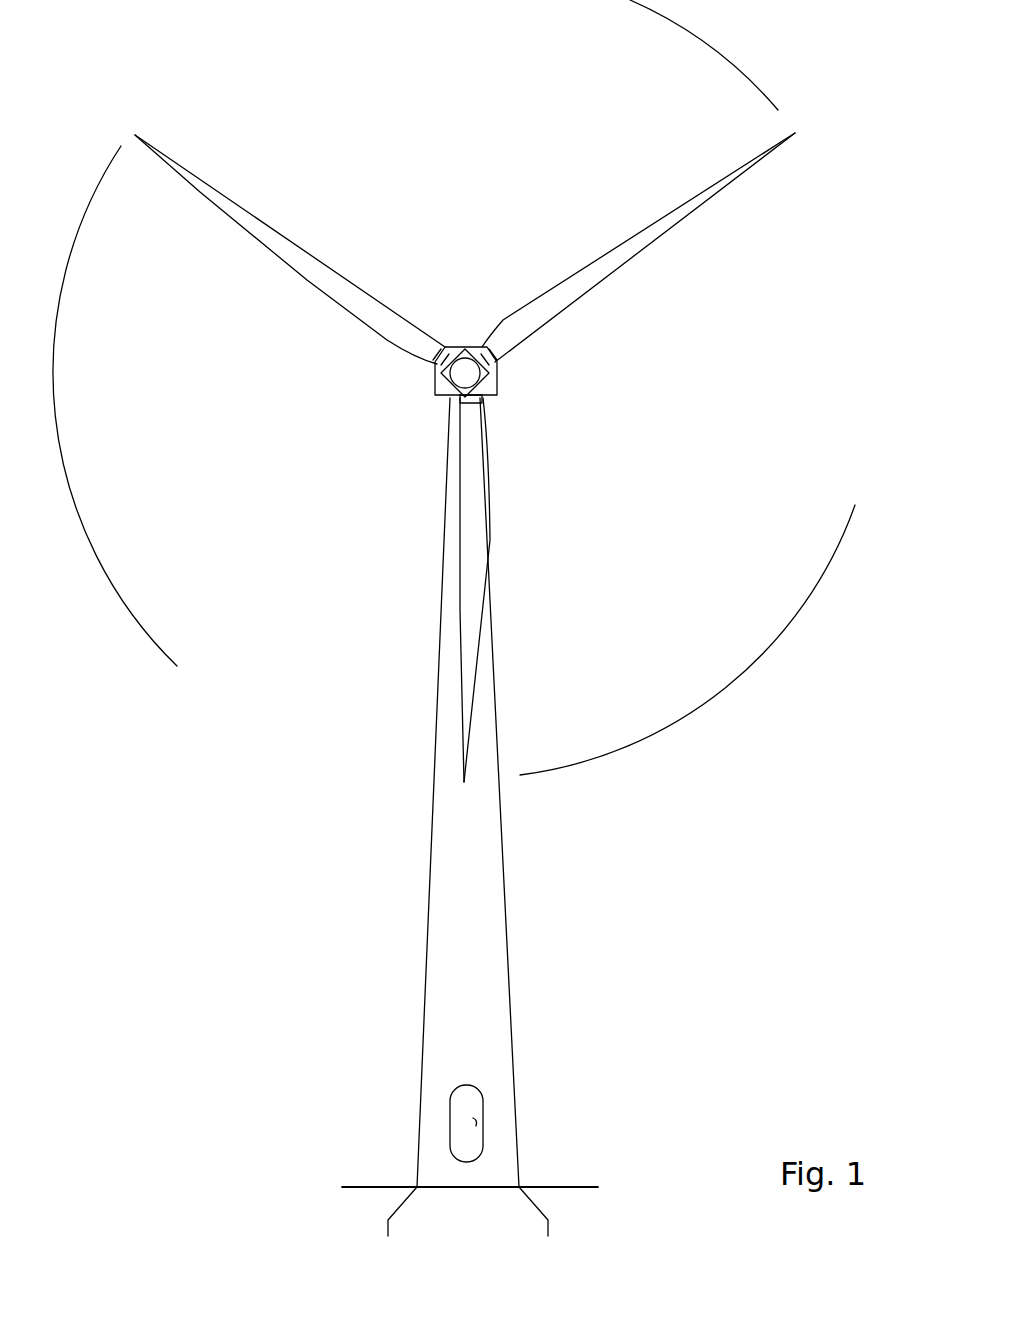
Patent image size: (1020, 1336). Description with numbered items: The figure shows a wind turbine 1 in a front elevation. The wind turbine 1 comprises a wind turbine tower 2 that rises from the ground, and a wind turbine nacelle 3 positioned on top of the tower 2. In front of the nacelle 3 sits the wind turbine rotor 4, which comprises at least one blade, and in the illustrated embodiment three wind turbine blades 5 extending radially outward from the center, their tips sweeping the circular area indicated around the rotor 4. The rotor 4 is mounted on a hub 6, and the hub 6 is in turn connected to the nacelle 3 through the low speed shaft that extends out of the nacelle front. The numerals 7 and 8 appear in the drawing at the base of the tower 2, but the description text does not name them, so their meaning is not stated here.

The wind turbine 1 is at (465, 660).
The wind turbine tower 2 is at (498, 875).
The wind turbine nacelle 3 is at (498, 397).
The wind turbine rotor 4 is at (747, 628).
The wind turbine blades 5 is at (470, 628).
The hub 6 is at (475, 345).
The foundation 7 is at (397, 1217).
The ground 8 is at (598, 1187).